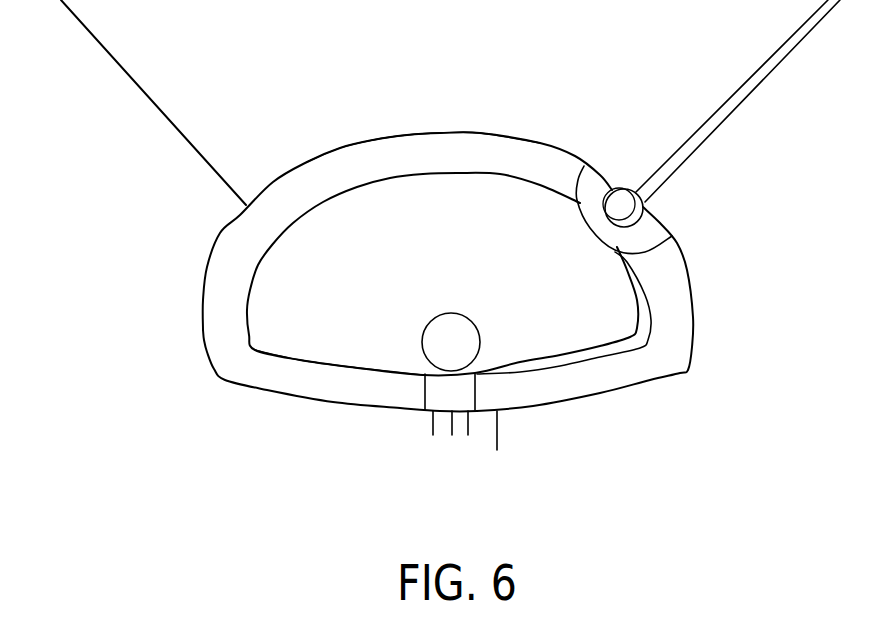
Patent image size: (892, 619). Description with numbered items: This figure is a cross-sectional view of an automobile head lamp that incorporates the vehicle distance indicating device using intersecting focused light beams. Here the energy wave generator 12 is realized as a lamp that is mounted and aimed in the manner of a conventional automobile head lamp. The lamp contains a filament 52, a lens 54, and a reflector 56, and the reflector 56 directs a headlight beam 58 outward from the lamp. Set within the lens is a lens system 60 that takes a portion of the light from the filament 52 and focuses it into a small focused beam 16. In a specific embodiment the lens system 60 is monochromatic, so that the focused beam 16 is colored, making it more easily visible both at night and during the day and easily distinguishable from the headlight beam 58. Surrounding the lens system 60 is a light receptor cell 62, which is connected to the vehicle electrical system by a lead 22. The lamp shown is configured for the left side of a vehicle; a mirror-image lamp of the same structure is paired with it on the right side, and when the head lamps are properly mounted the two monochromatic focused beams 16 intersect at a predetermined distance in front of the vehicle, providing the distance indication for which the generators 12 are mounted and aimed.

The energy wave generator 12 is at (187, 333).
The focused beam 16 is at (722, 120).
The lead 22 is at (605, 203).
The filament 52 is at (463, 342).
The lens 54 is at (370, 157).
The reflector 56 is at (298, 350).
The headlight beam 58 is at (156, 100).
The lens system 60 is at (618, 204).
The light receptor cell 62 is at (618, 233).